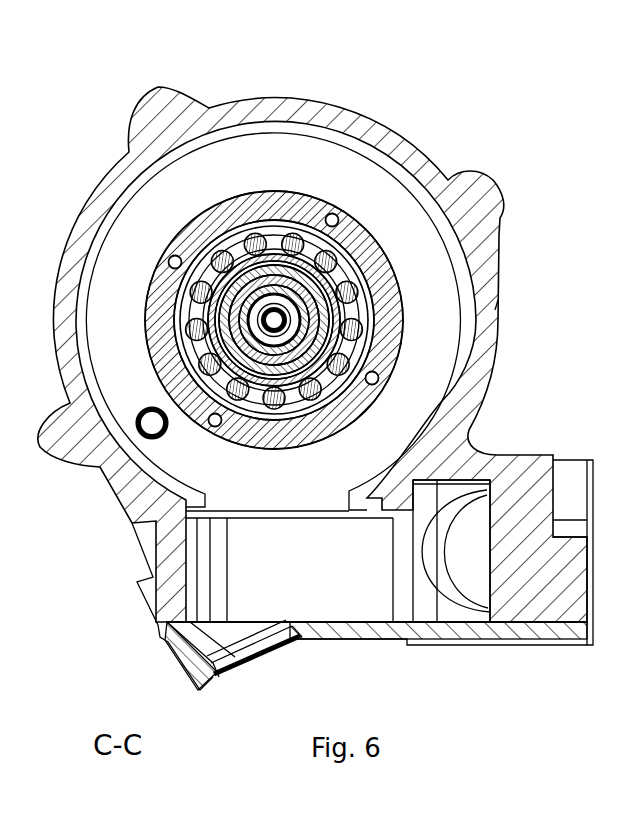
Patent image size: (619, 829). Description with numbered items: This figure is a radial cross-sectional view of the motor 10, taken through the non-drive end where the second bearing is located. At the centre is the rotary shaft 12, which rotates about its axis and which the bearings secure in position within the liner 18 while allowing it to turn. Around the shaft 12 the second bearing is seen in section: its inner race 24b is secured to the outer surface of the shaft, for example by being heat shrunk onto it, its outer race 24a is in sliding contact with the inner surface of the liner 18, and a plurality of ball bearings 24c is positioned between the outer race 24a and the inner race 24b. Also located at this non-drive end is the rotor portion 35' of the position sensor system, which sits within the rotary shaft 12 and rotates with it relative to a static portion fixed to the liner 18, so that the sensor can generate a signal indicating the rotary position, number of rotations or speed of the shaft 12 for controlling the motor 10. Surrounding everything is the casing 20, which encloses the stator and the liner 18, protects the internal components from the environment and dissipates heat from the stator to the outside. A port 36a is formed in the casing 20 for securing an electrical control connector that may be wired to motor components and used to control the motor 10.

The motor 10 is at (478, 119).
The rotary shaft 12 is at (210, 314).
The liner 18 is at (387, 325).
The casing 20 is at (472, 268).
The outer race 24a is at (265, 222).
The inner race 24b is at (333, 308).
The ball bearings 24c is at (350, 289).
The rotor portion 35' is at (320, 371).
The port 36a is at (230, 642).